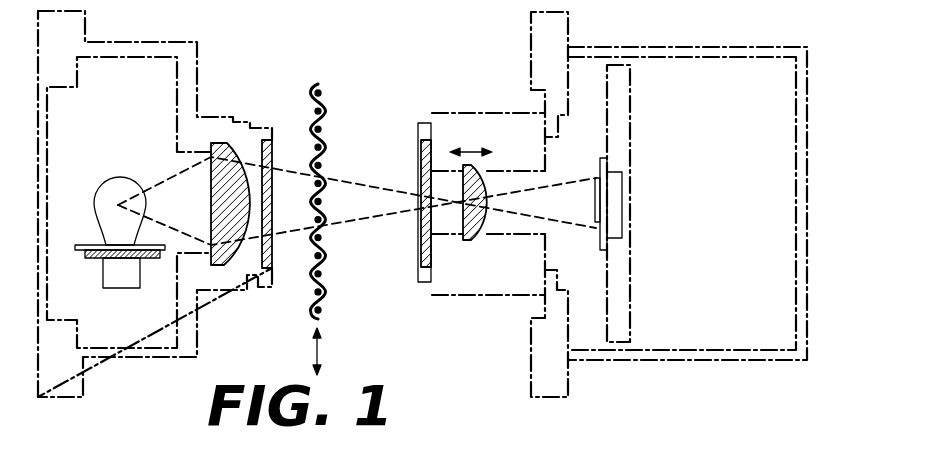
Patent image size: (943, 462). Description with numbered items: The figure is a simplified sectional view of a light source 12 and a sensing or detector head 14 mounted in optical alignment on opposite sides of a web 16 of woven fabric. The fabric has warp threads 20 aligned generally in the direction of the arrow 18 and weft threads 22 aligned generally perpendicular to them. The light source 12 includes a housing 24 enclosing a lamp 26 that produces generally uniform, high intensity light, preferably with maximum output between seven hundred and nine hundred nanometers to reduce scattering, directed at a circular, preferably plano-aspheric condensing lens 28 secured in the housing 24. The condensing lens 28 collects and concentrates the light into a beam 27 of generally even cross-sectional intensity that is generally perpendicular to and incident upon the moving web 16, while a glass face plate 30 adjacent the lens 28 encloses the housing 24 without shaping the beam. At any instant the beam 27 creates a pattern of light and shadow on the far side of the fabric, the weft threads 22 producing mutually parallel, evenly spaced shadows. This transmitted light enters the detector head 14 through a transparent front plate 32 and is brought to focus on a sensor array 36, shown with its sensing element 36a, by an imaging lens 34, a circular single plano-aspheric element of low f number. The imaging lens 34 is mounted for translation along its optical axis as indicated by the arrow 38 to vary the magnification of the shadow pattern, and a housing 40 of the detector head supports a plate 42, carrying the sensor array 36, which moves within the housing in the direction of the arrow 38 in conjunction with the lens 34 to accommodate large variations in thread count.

The light source 12 is at (186, 33).
The detector head 14 is at (663, 40).
The web 16 is at (312, 92).
The arrow 18 is at (318, 350).
The warp threads 20 is at (328, 118).
The weft threads 22 is at (324, 272).
The housing 24 is at (103, 40).
The lamp 26 is at (107, 180).
The beam 27 is at (345, 177).
The condensing lens 28 is at (228, 141).
The glass face plate 30 is at (277, 153).
The transparent front plate 32 is at (418, 165).
The imaging lens 34 is at (478, 169).
The sensor array 36 is at (598, 176).
The photodetector sensing element 36a is at (595, 203).
The arrow 38 is at (471, 150).
The housing 40 is at (591, 45).
The plate 42 is at (632, 93).